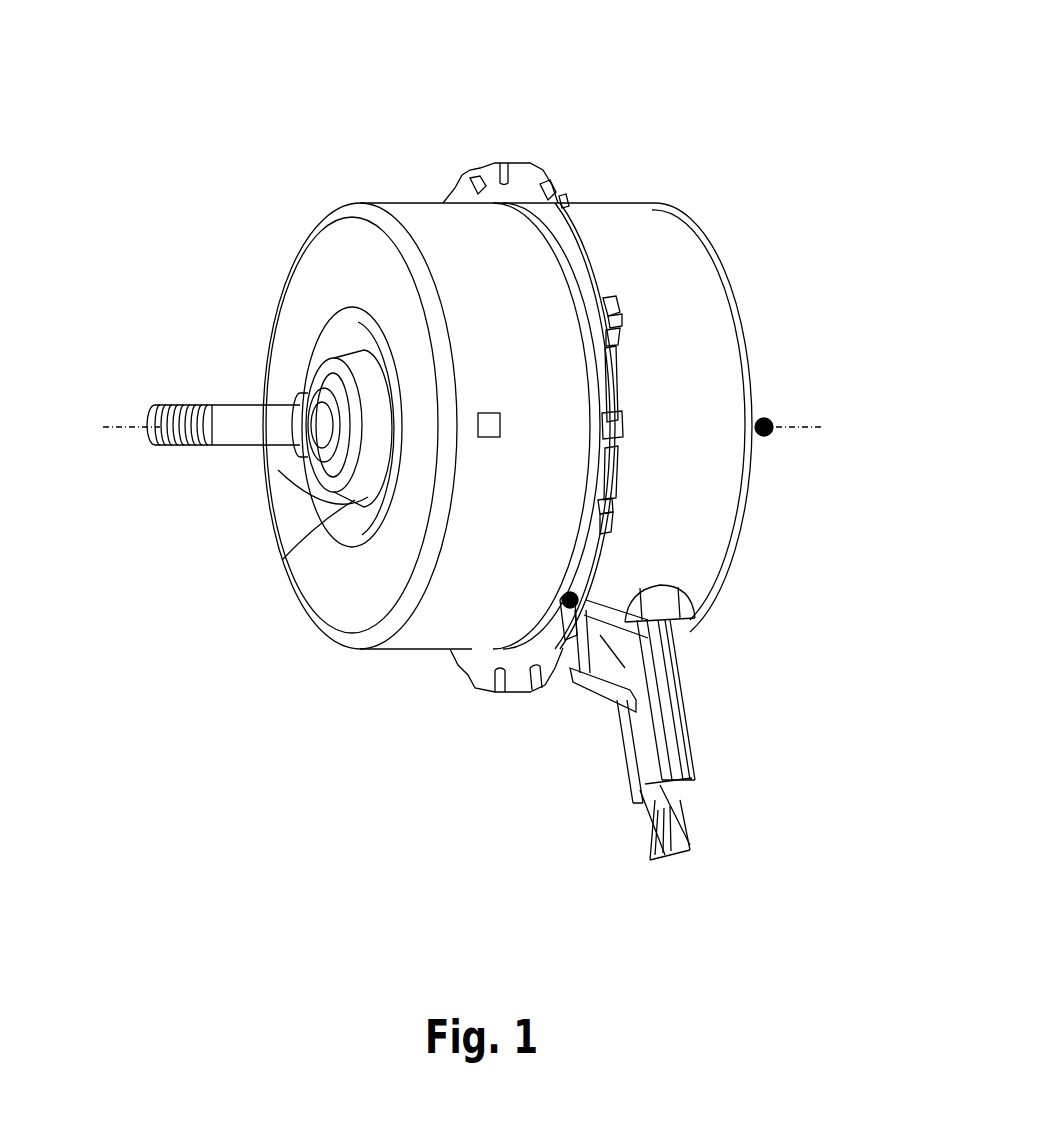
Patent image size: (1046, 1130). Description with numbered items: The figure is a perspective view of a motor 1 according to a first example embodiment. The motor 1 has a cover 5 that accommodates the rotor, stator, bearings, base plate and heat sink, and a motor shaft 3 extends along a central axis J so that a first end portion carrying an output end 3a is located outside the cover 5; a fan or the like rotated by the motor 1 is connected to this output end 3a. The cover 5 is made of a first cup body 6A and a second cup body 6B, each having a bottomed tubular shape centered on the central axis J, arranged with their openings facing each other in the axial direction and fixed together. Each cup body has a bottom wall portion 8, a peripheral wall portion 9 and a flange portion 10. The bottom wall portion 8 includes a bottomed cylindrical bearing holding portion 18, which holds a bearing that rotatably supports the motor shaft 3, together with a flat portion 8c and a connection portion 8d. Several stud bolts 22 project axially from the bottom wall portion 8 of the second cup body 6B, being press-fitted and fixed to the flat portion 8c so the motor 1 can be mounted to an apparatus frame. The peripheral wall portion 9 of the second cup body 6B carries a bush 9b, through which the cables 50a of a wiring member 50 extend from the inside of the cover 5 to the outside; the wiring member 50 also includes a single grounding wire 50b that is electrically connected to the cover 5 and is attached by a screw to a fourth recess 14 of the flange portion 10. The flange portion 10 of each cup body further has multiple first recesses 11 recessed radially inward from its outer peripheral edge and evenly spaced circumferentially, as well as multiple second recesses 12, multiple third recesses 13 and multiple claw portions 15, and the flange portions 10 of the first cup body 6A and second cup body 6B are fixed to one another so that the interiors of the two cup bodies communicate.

The motor 1 is at (745, 84).
The motor shaft 3 is at (240, 404).
The output end 3a is at (195, 446).
The central axis J is at (126, 424).
The cover 5 is at (395, 80).
The first cup body 6A is at (425, 202).
The second cup body 6B is at (615, 202).
The bottom wall portion 8 is at (320, 278).
The flat portion 8c is at (350, 598).
The connection portion 8d is at (355, 542).
The peripheral wall portion 9 is at (682, 570).
The bush 9b is at (665, 727).
The flange portion 10 is at (592, 240).
The first recess 11 is at (614, 322).
The second recess 12 is at (548, 185).
The third recess 13 is at (607, 425).
The fourth recess 14 is at (658, 632).
The claw portion 15 is at (565, 195).
The bearing holding portion 18 is at (330, 508).
The stud bolt 22 is at (769, 422).
The wiring member 50 is at (690, 822).
The cable 50a is at (690, 787).
The grounding wire 50b is at (597, 690).